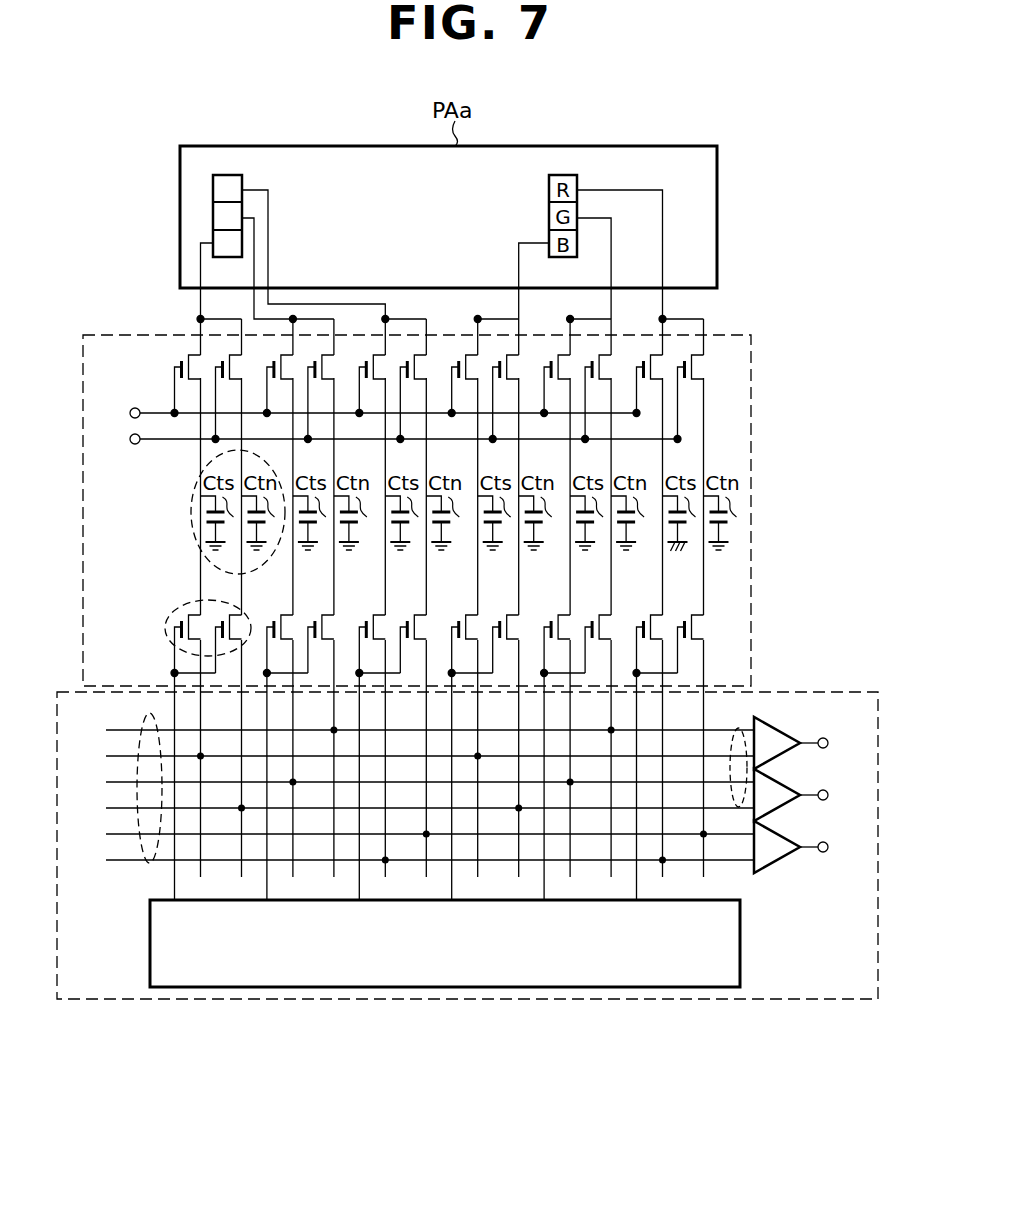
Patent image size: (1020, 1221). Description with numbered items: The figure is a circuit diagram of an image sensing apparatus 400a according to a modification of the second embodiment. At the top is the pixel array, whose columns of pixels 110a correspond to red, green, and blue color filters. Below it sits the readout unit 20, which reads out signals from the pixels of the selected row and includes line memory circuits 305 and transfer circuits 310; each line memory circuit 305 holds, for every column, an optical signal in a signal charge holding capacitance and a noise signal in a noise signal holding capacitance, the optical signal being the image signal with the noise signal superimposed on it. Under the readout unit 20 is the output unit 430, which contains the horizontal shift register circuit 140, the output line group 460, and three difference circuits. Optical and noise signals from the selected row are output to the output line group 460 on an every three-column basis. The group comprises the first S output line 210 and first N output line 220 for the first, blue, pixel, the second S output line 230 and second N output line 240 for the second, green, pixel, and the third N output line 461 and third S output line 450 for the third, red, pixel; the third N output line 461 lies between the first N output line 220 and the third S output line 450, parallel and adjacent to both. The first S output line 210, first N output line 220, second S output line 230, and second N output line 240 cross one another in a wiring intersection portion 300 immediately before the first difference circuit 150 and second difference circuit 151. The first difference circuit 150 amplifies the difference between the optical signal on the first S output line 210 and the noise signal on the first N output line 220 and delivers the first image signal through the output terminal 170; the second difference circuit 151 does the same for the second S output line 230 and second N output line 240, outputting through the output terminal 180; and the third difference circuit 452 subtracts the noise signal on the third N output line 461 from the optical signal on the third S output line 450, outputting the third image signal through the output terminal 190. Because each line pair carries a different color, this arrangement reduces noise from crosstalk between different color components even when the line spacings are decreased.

The pixel 110a is at (232, 177).
The readout unit 20 is at (751, 375).
The line memory circuit 305 is at (192, 523).
The transfer circuit 310 is at (173, 614).
The wiring intersection portion 300 is at (738, 728).
The first difference circuit 150 is at (803, 718).
The second difference circuit 151 is at (803, 777).
The third difference circuit 452 is at (803, 829).
The output terminal 170 is at (852, 722).
The output terminal 180 is at (852, 781).
The output terminal 190 is at (852, 833).
The second N output line 240 is at (128, 730).
The first S output line 210 is at (128, 756).
The second S output line 230 is at (128, 782).
The first N output line 220 is at (128, 808).
The third N output line 461 is at (128, 834).
The third S output line 450 is at (128, 860).
The output line group 460 is at (147, 866).
The horizontal shift register circuit 140 is at (742, 947).
The output unit 430 is at (830, 1000).
The image sensing apparatus 400a is at (467, 853).